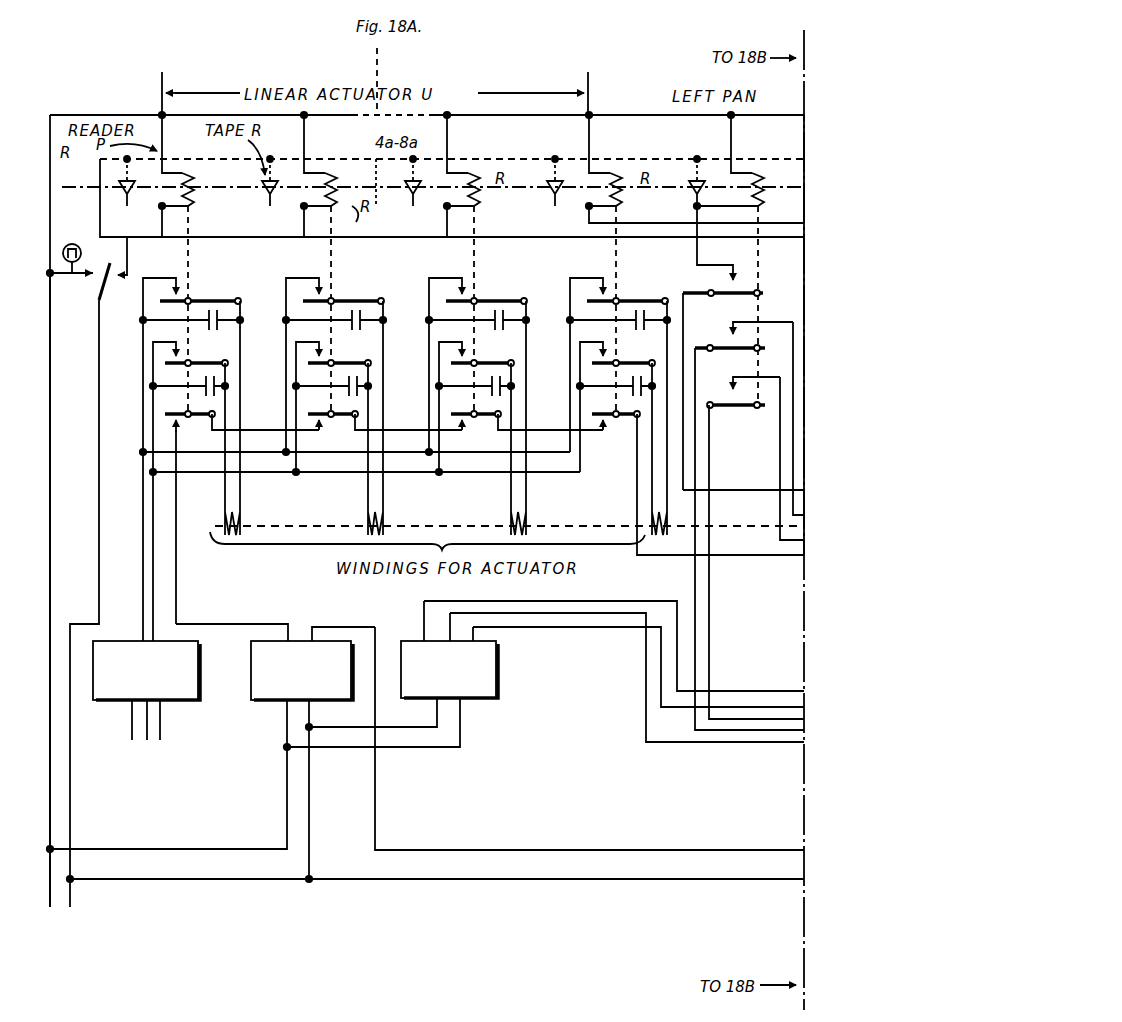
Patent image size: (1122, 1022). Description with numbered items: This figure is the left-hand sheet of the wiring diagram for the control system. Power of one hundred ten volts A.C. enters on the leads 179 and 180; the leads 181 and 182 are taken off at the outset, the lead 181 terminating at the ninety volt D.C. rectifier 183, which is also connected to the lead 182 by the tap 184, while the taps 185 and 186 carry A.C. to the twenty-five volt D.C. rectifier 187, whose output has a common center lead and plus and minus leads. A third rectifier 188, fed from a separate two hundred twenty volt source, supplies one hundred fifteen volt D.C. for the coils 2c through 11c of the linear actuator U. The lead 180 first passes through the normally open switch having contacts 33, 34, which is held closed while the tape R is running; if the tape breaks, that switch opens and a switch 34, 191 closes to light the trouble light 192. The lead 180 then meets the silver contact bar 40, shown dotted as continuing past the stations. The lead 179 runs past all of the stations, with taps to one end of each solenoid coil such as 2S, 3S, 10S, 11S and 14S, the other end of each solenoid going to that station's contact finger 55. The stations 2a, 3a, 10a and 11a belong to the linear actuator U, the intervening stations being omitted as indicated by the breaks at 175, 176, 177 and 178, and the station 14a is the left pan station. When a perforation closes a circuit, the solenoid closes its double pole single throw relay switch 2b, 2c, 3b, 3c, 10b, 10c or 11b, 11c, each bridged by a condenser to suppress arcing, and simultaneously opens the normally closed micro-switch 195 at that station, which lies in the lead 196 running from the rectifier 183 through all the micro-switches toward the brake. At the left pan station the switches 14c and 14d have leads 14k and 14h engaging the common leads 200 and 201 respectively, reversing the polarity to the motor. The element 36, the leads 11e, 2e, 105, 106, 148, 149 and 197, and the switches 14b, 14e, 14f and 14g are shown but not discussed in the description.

The station 2a is at (174, 176).
The station 3a is at (317, 176).
The station 10a is at (463, 176).
The station 11a is at (695, 169).
The left pan station 14a is at (750, 144).
The solenoid coil 2S is at (182, 200).
The solenoid coil 3S is at (326, 200).
The solenoid coil 10S is at (470, 200).
The solenoid coil 11S is at (630, 210).
The solenoid coil 14S is at (760, 198).
The silver contact bar 40 is at (699, 182).
The contact finger 55 is at (695, 196).
The reader relay 36 is at (100, 180).
The trouble light 192 is at (72, 243).
The switch contact 34 is at (104, 269).
The switch contact 33 is at (112, 282).
The switch contact 191 is at (82, 278).
The line break 175 is at (375, 112).
The conductor 11e is at (678, 226).
The conductor 2e is at (742, 230).
The relay switch 2b is at (182, 295).
The relay switch 3b is at (325, 295).
The relay switch 10b is at (468, 295).
The relay switch 11b is at (610, 295).
The relay contact 14b is at (743, 290).
The relay switch / coil 2c is at (183, 368).
The relay switch / coil 3c is at (320, 368).
The relay switch / coil 10c is at (465, 368).
The relay switch / coil 11c is at (610, 368).
The switch 14c is at (684, 340).
The switch 14d is at (740, 340).
The relay contact 14e is at (722, 395).
The lead 14h is at (793, 424).
The lead 14k is at (780, 458).
The conductor 14f is at (692, 565).
The conductor 14g is at (758, 742).
The line break 176 is at (396, 430).
The line break 177 is at (412, 452).
The line break 178 is at (397, 472).
The micro-switch 195 is at (170, 430).
The lead 196 is at (178, 522).
The lead 105 is at (366, 490).
The lead 106 is at (382, 500).
The conductor 197 is at (762, 493).
The common lead 200 is at (790, 540).
The common lead 201 is at (796, 516).
The conductor 148 is at (726, 691).
The conductor 149 is at (788, 686).
The rectifier 188 is at (182, 702).
The 90 volt D.C. rectifier 183 is at (250, 700).
The 25 volt D.C. rectifier 187 is at (500, 680).
The tap 186 is at (398, 730).
The tap 185 is at (402, 748).
The tap 184 is at (310, 800).
The lead 181 is at (196, 849).
The lead 182 is at (228, 880).
The lead 180 is at (72, 905).
The lead 179 is at (44, 912).